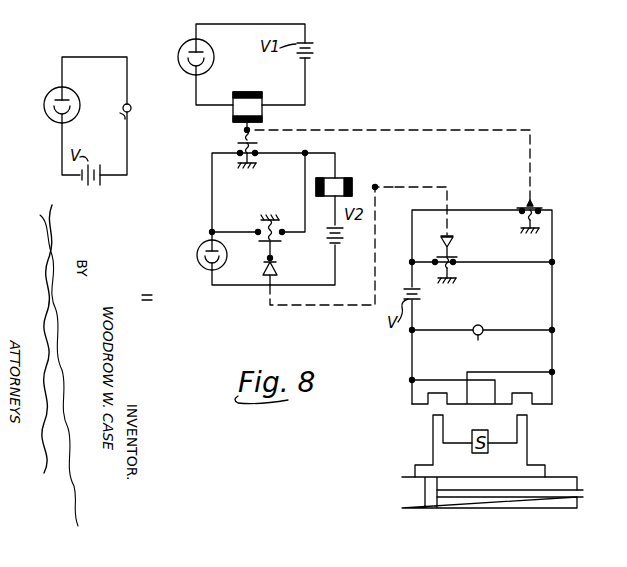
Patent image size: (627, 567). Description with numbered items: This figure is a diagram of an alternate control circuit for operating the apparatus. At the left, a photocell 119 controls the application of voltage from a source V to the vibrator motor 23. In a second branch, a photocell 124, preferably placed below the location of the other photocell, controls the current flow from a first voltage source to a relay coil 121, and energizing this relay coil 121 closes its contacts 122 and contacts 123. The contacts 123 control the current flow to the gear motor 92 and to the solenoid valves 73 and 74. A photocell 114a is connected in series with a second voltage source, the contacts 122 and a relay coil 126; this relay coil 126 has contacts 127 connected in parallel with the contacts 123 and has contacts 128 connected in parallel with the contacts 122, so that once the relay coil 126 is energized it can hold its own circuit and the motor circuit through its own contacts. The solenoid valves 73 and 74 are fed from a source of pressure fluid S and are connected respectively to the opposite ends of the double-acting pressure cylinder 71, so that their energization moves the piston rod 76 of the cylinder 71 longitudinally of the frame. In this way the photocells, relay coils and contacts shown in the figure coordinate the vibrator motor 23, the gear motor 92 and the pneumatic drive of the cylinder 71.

The photocell 119 is at (50, 89).
The vibrator motor 23 is at (123, 109).
The photocell 124 is at (178, 53).
The relay coil 121 is at (267, 100).
The contacts 122 is at (238, 143).
The relay coil 126 is at (348, 176).
The contacts 128 is at (277, 243).
The photocell 114a is at (196, 251).
The contacts 123 is at (535, 202).
The contacts 127 is at (452, 260).
The gear motor 92 is at (474, 336).
The solenoid valve 74 is at (432, 409).
The solenoid valve 73 is at (526, 408).
The piston rod 76 is at (580, 497).
The double-acting pressure cylinder 71 is at (472, 508).